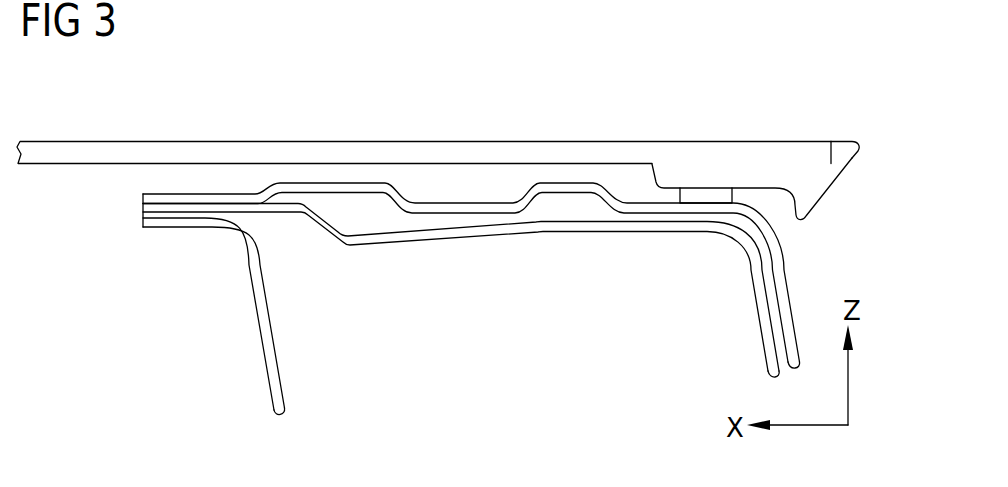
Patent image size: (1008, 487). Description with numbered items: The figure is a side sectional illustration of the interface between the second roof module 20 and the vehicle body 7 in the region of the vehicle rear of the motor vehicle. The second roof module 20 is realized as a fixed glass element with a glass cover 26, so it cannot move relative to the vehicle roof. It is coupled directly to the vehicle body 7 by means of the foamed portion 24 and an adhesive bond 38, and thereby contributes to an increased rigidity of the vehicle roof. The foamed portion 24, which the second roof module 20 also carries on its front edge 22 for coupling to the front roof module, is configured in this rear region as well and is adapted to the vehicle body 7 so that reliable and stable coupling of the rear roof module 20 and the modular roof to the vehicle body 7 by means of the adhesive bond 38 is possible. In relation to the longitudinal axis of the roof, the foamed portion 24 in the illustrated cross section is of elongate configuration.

The second roof module 20 is at (443, 78).
The glass cover 26 is at (312, 150).
The front edge 22 is at (821, 117).
The foamed portion 24 is at (852, 150).
The adhesive bond 38 is at (703, 204).
The vehicle body 7 is at (265, 293).